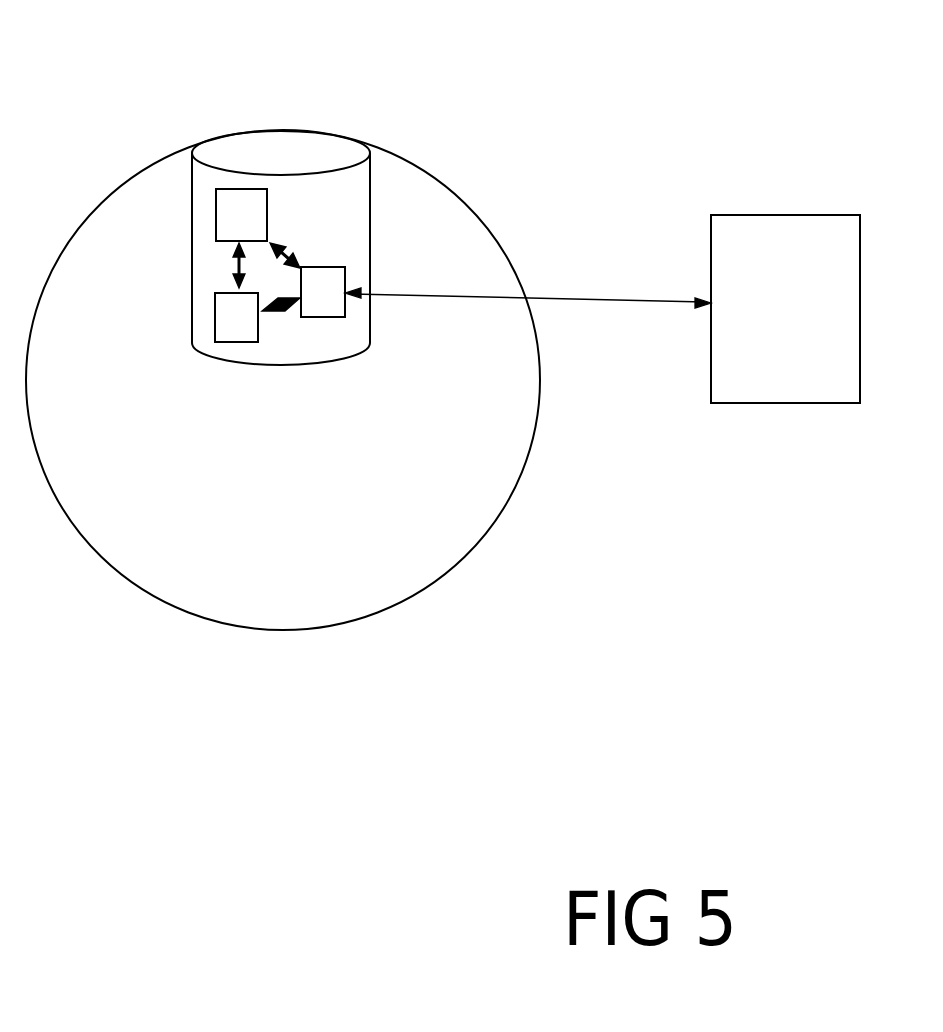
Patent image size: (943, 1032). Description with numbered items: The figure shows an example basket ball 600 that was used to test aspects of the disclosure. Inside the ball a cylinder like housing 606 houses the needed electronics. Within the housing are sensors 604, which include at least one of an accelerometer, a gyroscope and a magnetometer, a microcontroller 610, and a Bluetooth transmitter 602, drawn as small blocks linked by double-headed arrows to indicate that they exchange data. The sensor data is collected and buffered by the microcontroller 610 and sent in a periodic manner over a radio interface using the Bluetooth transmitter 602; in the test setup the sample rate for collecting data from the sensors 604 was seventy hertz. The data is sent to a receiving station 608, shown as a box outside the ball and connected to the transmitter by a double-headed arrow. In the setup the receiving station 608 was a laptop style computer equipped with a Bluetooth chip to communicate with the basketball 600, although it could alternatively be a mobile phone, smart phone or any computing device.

The basket ball 600 is at (518, 478).
The Bluetooth transmitter 602 is at (343, 268).
The sensors 604 is at (228, 222).
The cylinder like housing 606 is at (313, 148).
The receiving station 608 is at (766, 255).
The microcontroller 610 is at (229, 343).